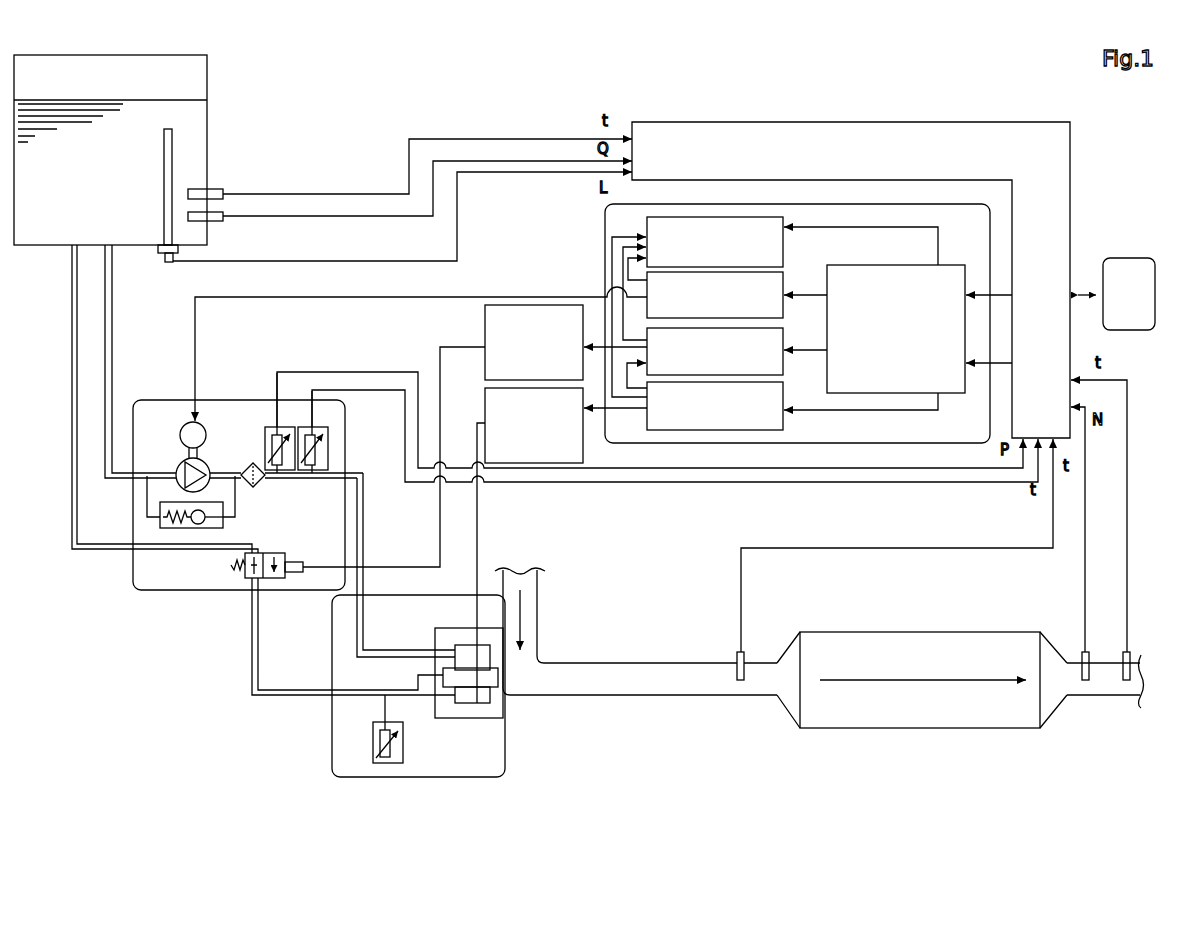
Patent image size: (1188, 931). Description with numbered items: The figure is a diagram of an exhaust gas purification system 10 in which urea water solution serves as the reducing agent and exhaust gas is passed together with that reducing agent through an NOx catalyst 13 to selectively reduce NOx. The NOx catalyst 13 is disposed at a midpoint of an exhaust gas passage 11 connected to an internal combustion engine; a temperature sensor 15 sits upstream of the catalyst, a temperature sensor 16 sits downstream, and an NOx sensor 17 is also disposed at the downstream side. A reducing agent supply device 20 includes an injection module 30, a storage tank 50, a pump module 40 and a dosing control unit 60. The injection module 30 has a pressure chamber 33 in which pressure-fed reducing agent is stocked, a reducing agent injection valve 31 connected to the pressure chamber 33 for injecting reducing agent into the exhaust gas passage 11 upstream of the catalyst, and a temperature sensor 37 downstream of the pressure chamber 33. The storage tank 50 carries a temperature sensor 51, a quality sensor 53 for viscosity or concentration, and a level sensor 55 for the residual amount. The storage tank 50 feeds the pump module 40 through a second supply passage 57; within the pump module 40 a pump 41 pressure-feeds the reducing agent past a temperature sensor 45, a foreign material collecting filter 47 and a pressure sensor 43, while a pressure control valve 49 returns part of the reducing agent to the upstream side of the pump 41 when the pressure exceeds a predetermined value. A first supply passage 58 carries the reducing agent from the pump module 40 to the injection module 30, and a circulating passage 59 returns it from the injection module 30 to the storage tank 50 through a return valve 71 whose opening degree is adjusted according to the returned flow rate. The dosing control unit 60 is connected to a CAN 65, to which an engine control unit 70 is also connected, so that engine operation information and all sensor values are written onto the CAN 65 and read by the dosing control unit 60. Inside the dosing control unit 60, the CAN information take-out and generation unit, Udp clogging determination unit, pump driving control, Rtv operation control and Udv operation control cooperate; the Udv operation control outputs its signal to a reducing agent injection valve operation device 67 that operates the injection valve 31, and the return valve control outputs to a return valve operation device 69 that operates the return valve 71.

The exhaust gas purification system 10 is at (1020, 95).
The exhaust gas passage 11 is at (616, 699).
The NOx catalyst 13 is at (957, 733).
The temperature sensor 15 is at (735, 656).
The temperature sensor 16 is at (1130, 655).
The NOx sensor 17 is at (1083, 652).
The reducing agent supply device 20 is at (343, 102).
The injection module 30 is at (413, 782).
The reducing agent injection valve 31 is at (497, 708).
The pressure chamber 33 is at (452, 645).
The temperature sensor 37 is at (370, 757).
The pump module 40 is at (160, 594).
The pump 41 is at (180, 466).
The pressure sensor 43 is at (330, 449).
The temperature sensor 45 is at (268, 445).
The foreign material collecting filter 47 is at (258, 488).
The pressure control valve 49 is at (225, 522).
The storage tank 50 is at (209, 88).
The temperature sensor 51 is at (212, 189).
The quality sensor 53 is at (213, 222).
The level sensor 55 is at (161, 250).
The second supply passage 57 is at (113, 370).
The first supply passage 58 is at (364, 490).
The circulating passage 59 is at (252, 688).
The dosing control unit (DCU) 60 is at (605, 248).
The CAN (Controller Area Network) 65 is at (1072, 237).
The reducing agent injection valve operation device 67 is at (583, 454).
The return valve operation device 69 is at (485, 313).
The engine control unit (ECU) 70 is at (1133, 331).
The return valve 71 is at (282, 556).